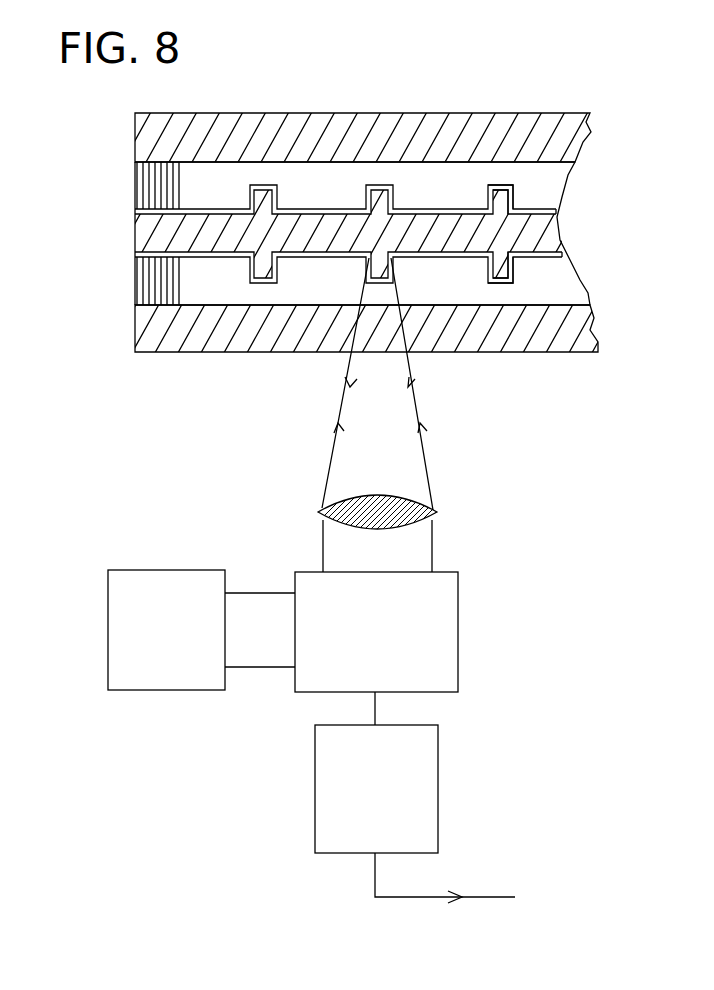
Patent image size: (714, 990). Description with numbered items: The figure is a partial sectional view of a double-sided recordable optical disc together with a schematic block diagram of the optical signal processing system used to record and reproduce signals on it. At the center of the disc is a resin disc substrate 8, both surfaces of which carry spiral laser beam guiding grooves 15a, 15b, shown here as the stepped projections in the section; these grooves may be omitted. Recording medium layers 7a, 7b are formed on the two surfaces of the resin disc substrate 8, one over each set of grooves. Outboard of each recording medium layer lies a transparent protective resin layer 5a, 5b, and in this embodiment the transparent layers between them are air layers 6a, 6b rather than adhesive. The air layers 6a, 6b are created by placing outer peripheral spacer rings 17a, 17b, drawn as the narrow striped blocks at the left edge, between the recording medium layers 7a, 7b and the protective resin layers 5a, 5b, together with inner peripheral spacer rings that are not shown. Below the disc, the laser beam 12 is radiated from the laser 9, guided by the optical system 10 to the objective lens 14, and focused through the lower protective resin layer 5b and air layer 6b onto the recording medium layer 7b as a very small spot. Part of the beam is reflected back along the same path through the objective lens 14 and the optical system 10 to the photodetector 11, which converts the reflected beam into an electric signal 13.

The transparent protective resin layer 5a is at (375, 123).
The transparent protective resin layer 5b is at (487, 352).
The air layer 6a is at (563, 187).
The air layer 6b is at (587, 292).
The recording medium layer 7a is at (135, 212).
The recording medium layer 7b is at (135, 255).
The resin disc substrate 8 is at (468, 218).
The laser beam guiding groove 15a is at (535, 248).
The laser beam guiding groove 15b is at (490, 250).
The outer peripheral spacer ring 17a is at (143, 182).
The outer peripheral spacer ring 17b is at (140, 280).
The light beam 12 is at (423, 457).
The objective lens 14 is at (323, 510).
The optical system 10 is at (458, 627).
The laser 9 is at (130, 690).
The photodetector 11 is at (438, 810).
The electric signal 13 is at (467, 885).